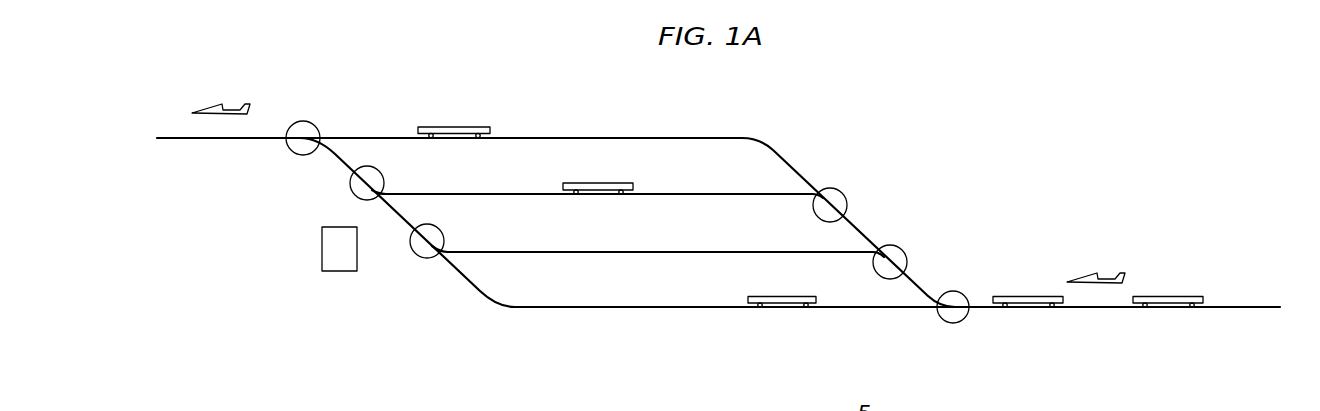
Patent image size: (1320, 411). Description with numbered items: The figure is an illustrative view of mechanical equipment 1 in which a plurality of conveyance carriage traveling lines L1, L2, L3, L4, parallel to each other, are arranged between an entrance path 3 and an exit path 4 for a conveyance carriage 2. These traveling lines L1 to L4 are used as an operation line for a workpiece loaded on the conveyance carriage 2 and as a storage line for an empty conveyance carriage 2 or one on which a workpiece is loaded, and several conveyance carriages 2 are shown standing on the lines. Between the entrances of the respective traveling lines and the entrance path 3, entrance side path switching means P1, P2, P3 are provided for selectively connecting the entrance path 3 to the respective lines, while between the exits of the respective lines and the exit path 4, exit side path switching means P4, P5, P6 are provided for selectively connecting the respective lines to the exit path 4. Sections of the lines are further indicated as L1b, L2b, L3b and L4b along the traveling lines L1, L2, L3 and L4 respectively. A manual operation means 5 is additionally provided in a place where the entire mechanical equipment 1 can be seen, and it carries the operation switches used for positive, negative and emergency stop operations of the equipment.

The mechanical equipment 1 is at (588, 318).
The conveyance carriage 2 is at (460, 127).
The entrance path 3 is at (1082, 309).
The exit path 4 is at (247, 140).
The manual operation means 5 is at (327, 242).
The entrance side path switching means P1 is at (960, 295).
The entrance side path switching means P2 is at (897, 249).
The entrance side path switching means P3 is at (836, 192).
The exit side path switching means P4 is at (440, 230).
The exit side path switching means P5 is at (381, 174).
The exit side path switching means P6 is at (311, 125).
The conveyance carriage traveling line L1 is at (735, 295).
The conveyance carriage traveling line L2 is at (658, 242).
The conveyance carriage traveling line L3 is at (597, 183).
The conveyance carriage traveling line L4 is at (521, 125).
The track section L1b is at (663, 310).
The track section L2b is at (637, 254).
The track section L3b is at (688, 196).
The track section L4b is at (652, 137).